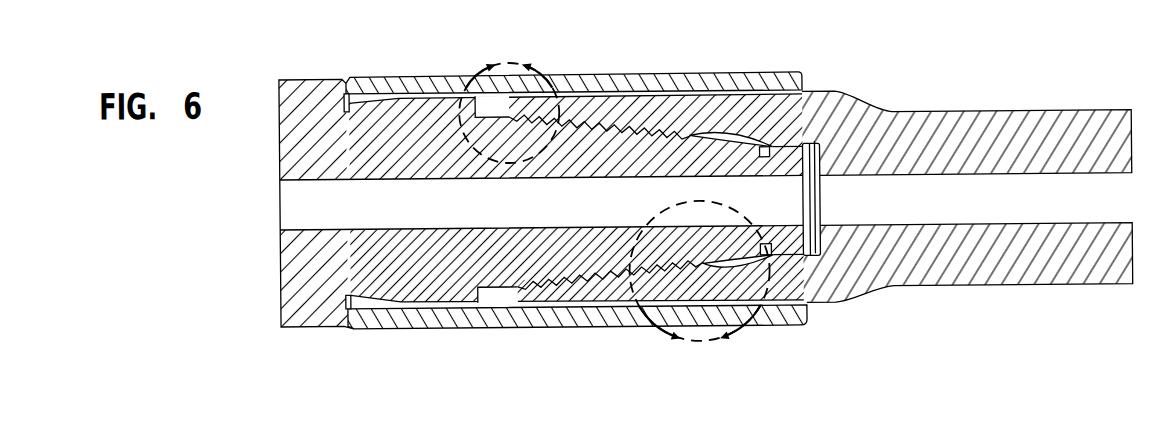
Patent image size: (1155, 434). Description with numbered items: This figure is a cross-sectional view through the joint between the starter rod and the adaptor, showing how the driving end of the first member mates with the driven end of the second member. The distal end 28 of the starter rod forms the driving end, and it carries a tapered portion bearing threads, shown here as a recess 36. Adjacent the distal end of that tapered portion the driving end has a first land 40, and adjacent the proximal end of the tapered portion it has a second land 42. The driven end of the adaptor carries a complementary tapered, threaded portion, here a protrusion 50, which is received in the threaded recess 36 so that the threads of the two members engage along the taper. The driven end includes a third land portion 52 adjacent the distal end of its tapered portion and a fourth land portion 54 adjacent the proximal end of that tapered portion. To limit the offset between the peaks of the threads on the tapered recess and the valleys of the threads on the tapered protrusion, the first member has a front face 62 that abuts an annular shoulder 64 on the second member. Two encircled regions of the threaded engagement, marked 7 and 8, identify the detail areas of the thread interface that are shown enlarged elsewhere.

The distal end 28 is at (895, 130).
The recess 36 is at (595, 293).
The first land 40 is at (488, 297).
The second land 42 is at (770, 251).
The protrusion 50 is at (625, 153).
The third land portion 52 is at (785, 162).
The fourth land portion 54 is at (496, 283).
The front face 62 is at (352, 88).
The annular shoulder 64 is at (335, 90).
The detail circle FIG. 7 is at (508, 95).
The detail circle FIG. 8 is at (700, 287).